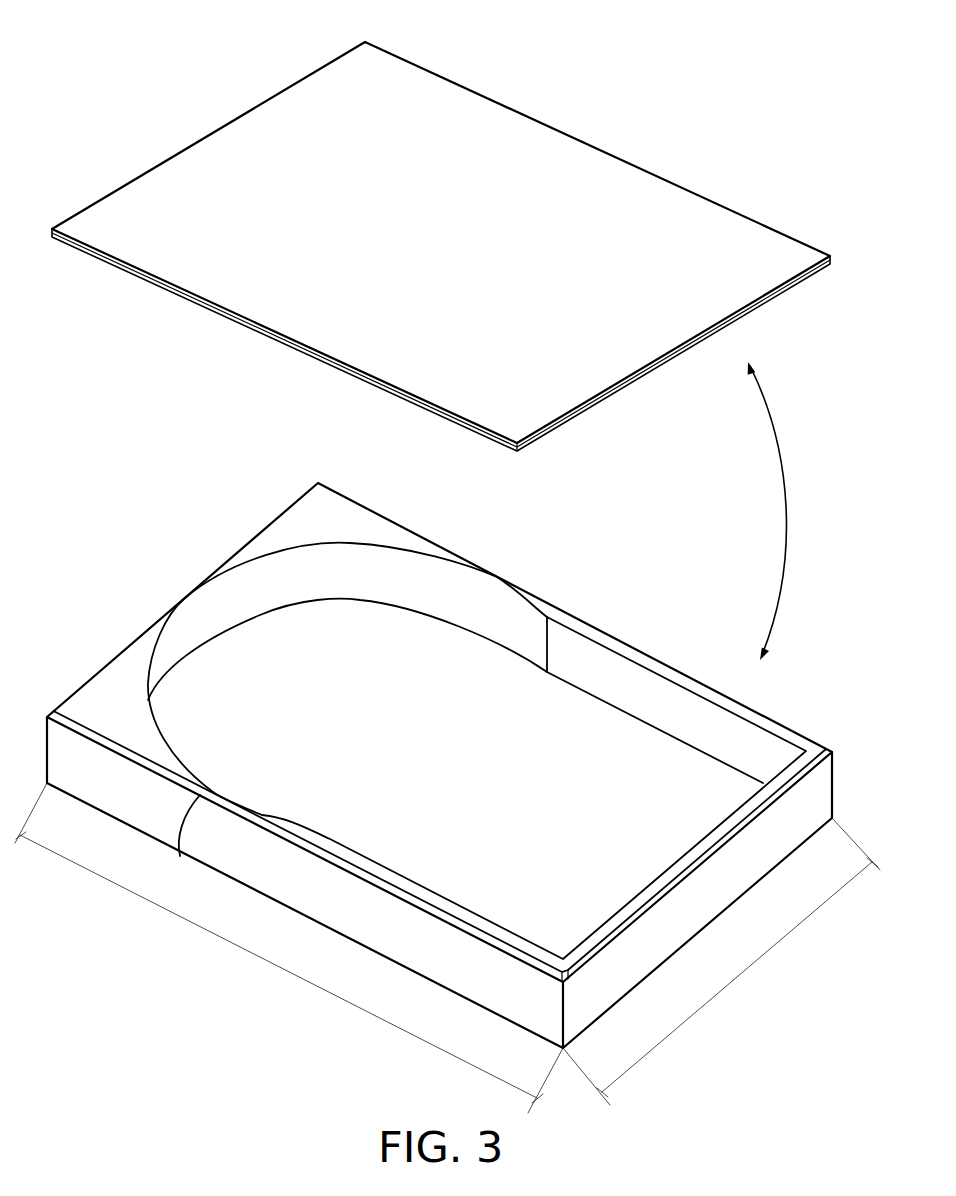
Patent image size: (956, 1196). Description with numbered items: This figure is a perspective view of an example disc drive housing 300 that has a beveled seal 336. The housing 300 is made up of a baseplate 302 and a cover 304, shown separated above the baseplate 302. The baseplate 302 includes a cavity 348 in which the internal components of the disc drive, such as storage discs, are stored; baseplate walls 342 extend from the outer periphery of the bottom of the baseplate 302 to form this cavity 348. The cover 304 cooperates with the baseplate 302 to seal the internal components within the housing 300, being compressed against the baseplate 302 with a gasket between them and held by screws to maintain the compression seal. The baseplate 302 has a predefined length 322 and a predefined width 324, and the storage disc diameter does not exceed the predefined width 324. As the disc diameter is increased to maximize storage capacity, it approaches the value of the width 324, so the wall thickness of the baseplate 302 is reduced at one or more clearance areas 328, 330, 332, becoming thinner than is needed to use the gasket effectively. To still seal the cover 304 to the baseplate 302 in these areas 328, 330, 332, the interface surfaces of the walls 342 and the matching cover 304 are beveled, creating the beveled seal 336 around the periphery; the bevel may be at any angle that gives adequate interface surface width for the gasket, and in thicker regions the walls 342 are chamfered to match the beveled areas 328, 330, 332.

The disc drive housing 300 is at (106, 86).
The baseplate 302 is at (439, 765).
The cover 304 is at (441, 246).
The predefined length 322 is at (289, 948).
The predefined width 324 is at (721, 961).
The clearance area 328 is at (244, 788).
The clearance area 330 is at (175, 585).
The clearance area 332 is at (494, 567).
The beveled seal 336 is at (180, 852).
The baseplate walls 342 is at (440, 846).
The cavity 348 is at (631, 765).